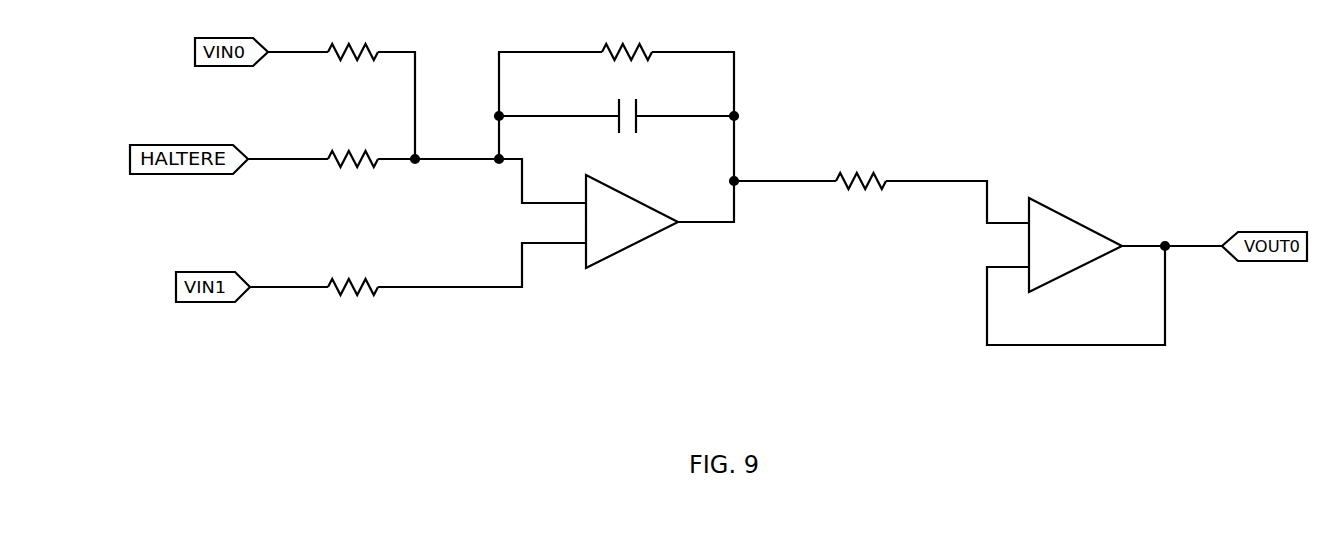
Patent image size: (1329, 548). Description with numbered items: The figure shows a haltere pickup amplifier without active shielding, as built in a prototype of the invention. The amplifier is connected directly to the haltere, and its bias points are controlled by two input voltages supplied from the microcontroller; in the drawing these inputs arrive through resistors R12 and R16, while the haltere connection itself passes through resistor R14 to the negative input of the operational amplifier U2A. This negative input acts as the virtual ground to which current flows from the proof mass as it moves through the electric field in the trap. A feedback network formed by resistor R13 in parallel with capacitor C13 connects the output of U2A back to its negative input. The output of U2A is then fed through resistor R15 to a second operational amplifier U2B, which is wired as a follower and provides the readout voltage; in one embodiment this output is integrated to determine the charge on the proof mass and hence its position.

The resistor R12 is at (353, 39).
The feedback resistor R13 is at (627, 39).
The resistor R14 is at (353, 146).
The resistor R15 is at (861, 168).
The resistor R16 is at (353, 273).
The feedback capacitor C13 is at (627, 128).
The operational amplifier U2A is at (644, 221).
The operational amplifier U2B (voltage follower) U2B is at (1088, 245).